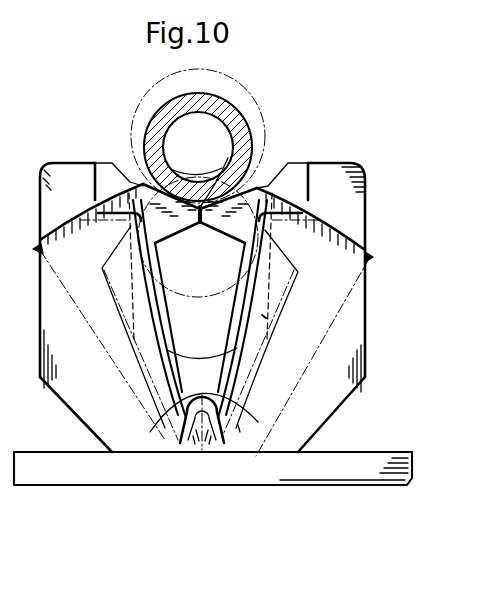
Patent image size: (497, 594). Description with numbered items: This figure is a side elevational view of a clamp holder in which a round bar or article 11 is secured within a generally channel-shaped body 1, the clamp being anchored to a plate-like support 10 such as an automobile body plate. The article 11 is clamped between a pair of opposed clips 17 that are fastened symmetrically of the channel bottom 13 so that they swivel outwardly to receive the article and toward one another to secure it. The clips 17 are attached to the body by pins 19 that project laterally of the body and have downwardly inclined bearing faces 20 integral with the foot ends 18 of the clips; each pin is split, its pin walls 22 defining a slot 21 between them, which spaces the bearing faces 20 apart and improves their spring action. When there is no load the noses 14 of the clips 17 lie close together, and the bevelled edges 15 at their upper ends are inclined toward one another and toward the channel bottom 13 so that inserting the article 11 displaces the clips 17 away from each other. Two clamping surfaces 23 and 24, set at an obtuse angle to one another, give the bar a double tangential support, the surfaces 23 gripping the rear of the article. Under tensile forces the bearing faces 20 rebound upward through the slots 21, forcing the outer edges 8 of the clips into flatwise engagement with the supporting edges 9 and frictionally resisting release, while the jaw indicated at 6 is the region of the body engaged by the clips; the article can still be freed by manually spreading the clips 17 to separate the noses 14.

The channel-shaped body 1 is at (352, 358).
The clamping jaw 6 is at (320, 257).
The outer edges 8 is at (287, 187).
The supporting edges 9 is at (333, 203).
The plate-like support 10 is at (53, 467).
The round bar or article 11 is at (237, 105).
The channel bottom 13 is at (201, 357).
The noses 14 is at (196, 172).
The bevelled edges 15 is at (247, 184).
The clips 17 is at (262, 315).
The foot ends 18 is at (240, 430).
The pins 19 is at (202, 390).
The bearing faces 20 is at (227, 430).
The slot 21 is at (197, 430).
The pin walls 22 is at (215, 400).
The clamping surfaces 23 is at (220, 231).
The clamping surfaces 24 is at (241, 308).